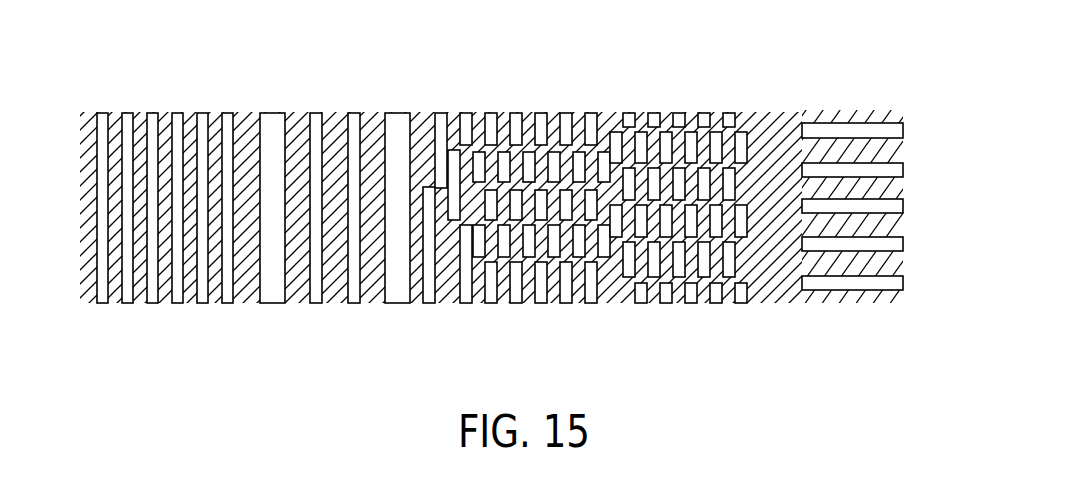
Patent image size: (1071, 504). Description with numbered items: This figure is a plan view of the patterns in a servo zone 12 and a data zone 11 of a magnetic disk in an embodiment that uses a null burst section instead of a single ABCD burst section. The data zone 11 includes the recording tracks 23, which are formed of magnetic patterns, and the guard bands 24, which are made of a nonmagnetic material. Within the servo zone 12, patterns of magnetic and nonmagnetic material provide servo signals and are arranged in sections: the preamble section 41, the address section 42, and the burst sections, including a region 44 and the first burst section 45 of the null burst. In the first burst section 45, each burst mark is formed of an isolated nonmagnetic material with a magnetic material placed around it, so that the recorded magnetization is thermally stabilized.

The data zone 11 is at (938, 83).
The servo zone 12 is at (802, 110).
The recording tracks 23 is at (897, 148).
The guard bands 24 is at (895, 132).
The preamble section 41 is at (97, 325).
The address section 42 is at (468, 325).
The third pattern region 44 is at (468, 325).
The first burst section (AB) 45 is at (598, 325).